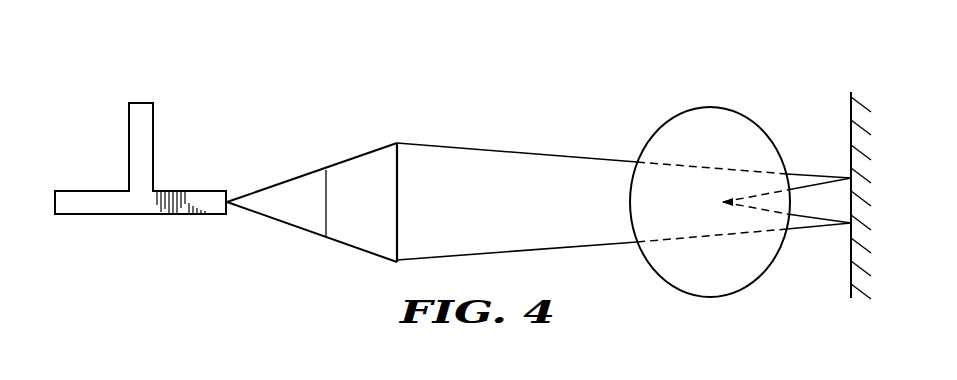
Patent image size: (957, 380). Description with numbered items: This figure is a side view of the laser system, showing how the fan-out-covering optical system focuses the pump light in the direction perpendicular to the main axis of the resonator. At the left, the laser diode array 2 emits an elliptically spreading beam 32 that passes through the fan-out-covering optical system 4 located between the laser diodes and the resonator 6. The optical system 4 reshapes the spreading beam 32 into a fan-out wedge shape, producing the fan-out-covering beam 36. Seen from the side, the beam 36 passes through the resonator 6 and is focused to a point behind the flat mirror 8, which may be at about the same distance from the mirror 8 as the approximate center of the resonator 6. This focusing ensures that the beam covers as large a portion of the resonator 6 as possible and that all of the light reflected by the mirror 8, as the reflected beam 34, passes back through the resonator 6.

The laser diode array 2 is at (141, 103).
The fan-out-covering optical system 4 is at (363, 252).
The resonator 6 is at (752, 105).
The flat mirror 8 is at (861, 92).
The elliptically spreading beam 32 is at (277, 182).
The reflected beam 34 is at (827, 212).
The fan-out-covering beam 36 is at (478, 158).